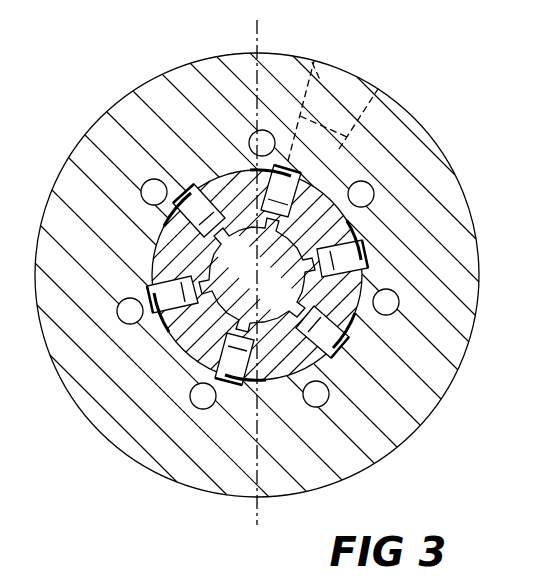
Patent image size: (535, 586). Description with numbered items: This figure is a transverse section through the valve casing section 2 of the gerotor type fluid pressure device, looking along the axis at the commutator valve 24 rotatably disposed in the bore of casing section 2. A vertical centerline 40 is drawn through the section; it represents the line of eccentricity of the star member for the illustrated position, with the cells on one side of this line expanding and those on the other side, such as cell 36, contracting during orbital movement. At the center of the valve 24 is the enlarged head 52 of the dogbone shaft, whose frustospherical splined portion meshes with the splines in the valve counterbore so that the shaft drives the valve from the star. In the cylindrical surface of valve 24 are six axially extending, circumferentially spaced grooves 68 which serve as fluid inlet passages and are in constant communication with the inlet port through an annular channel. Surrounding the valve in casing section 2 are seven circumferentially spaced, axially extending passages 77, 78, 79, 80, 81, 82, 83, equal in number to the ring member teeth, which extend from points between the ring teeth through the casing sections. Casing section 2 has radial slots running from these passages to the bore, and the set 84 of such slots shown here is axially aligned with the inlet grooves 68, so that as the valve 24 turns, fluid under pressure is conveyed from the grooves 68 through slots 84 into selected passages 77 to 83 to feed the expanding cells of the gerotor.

The valve casing section 2 is at (457, 173).
The commutator valve 24 is at (165, 256).
The cell 36 is at (320, 82).
The vertical centerline 40 is at (263, 52).
The enlarged head 52 is at (226, 282).
The grooves 68 is at (228, 380).
The passage 77 is at (203, 409).
The passage 78 is at (122, 322).
The passage 79 is at (148, 180).
The passage 80 is at (252, 136).
The passage 81 is at (371, 184).
The passage 82 is at (400, 301).
The passage 83 is at (323, 406).
The set of slots 84 is at (330, 363).